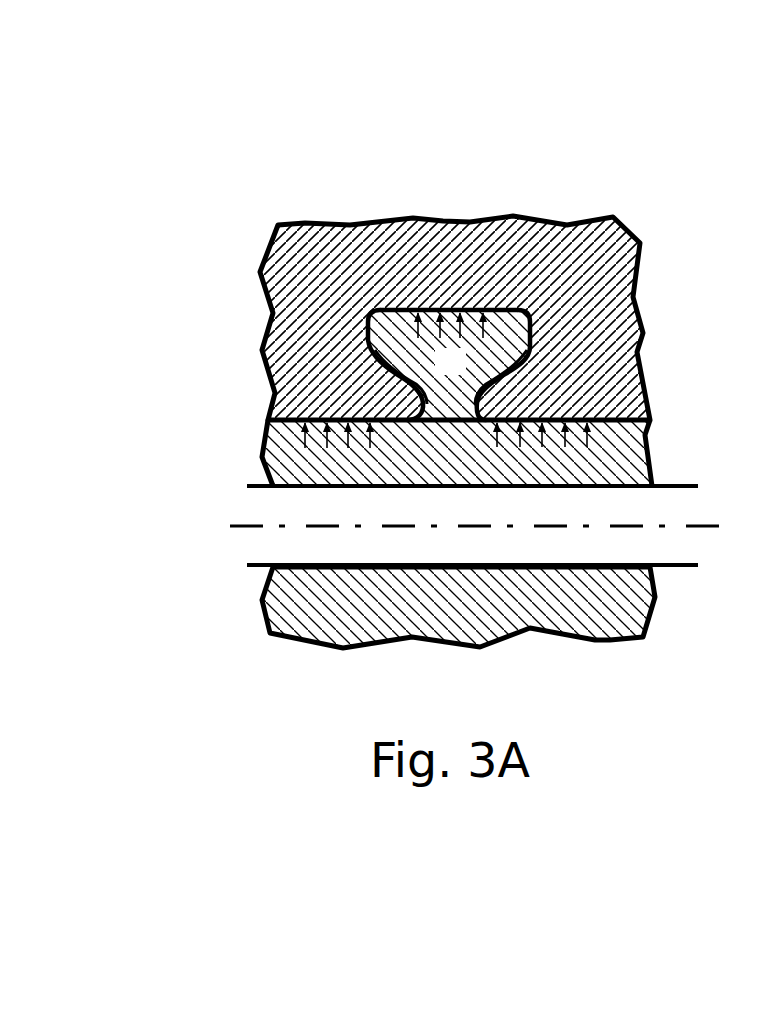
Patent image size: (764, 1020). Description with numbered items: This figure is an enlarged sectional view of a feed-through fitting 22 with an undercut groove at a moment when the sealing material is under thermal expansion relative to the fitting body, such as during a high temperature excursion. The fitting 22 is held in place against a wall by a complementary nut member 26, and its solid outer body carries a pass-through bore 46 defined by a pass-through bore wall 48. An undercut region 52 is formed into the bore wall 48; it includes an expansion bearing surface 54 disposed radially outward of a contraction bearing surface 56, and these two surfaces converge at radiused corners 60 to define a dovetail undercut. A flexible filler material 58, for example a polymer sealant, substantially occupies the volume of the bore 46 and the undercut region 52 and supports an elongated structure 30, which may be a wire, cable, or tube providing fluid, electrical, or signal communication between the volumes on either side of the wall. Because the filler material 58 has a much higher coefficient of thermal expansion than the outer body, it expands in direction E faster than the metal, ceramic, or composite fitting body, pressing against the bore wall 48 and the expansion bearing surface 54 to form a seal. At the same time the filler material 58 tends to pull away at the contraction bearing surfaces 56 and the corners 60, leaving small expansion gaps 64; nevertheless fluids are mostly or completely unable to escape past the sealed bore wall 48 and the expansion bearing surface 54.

The feed-through fitting 22 is at (558, 175).
The complementary nut member 26 is at (418, 217).
The elongated structure 30 is at (255, 502).
The pass-through bore 46 is at (250, 462).
The pass-through bore wall 48 is at (600, 440).
The undercut region 52 is at (438, 372).
The expansion bearing surface 54 is at (480, 310).
The contraction bearing surface 56 is at (383, 372).
The flexible filler material 58 is at (457, 602).
The radiused corner 60 is at (365, 315).
The expansion gap 64 is at (342, 223).
The expansion direction E is at (457, 310).